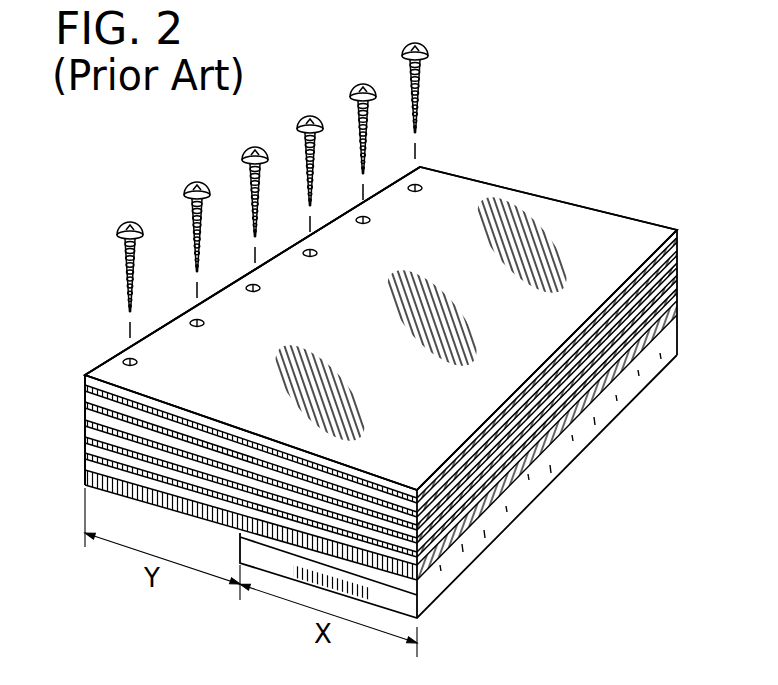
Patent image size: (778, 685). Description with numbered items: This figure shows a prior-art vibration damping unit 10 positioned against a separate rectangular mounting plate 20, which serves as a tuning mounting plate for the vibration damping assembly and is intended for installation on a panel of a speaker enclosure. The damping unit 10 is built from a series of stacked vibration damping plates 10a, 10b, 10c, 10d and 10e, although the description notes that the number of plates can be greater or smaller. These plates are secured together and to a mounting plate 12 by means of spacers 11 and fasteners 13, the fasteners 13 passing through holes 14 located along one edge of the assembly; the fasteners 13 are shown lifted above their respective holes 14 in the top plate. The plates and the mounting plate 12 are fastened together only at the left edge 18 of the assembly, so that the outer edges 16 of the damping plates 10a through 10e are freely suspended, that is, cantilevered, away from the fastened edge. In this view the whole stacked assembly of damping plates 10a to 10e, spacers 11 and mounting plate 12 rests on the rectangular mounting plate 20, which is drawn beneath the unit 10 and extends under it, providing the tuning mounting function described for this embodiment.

The vibration damping unit 10 is at (568, 163).
The vibration damping plate 10a is at (678, 233).
The vibration damping plate 10b is at (678, 250).
The vibration damping plate 10c is at (678, 265).
The vibration damping plate 10d is at (678, 282).
The vibration damping plate 10e is at (678, 300).
The spacers 11 is at (83, 428).
The mounting plate 12 is at (678, 320).
The fasteners 13 is at (243, 155).
The holes 14 is at (124, 358).
The outer edges of the damping plates 16 is at (620, 192).
The left edge of the assembly 18 is at (171, 322).
The rectangular mounting plate 20 is at (578, 438).